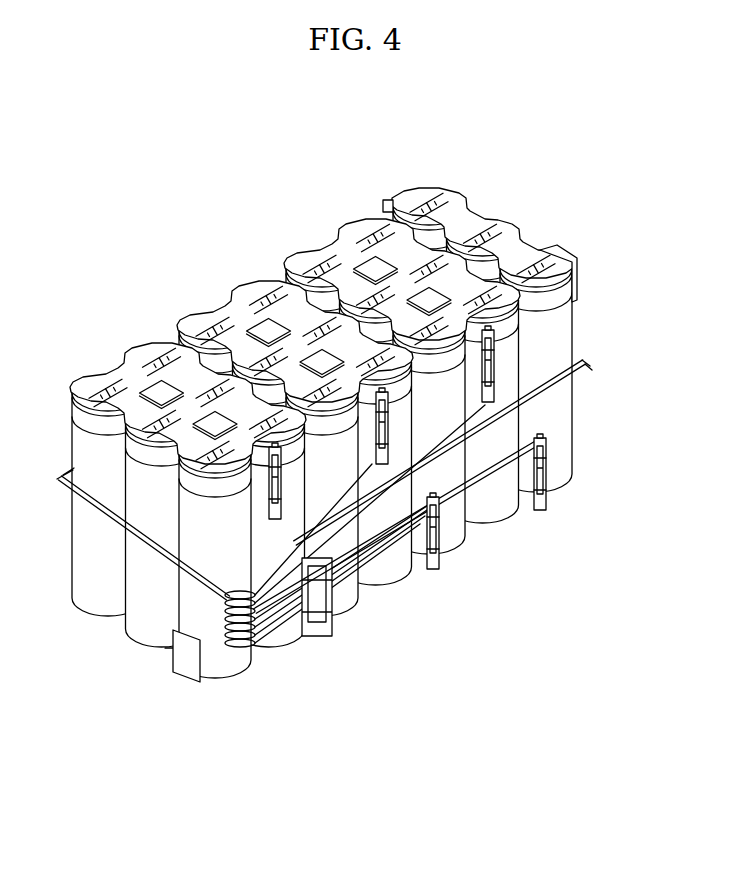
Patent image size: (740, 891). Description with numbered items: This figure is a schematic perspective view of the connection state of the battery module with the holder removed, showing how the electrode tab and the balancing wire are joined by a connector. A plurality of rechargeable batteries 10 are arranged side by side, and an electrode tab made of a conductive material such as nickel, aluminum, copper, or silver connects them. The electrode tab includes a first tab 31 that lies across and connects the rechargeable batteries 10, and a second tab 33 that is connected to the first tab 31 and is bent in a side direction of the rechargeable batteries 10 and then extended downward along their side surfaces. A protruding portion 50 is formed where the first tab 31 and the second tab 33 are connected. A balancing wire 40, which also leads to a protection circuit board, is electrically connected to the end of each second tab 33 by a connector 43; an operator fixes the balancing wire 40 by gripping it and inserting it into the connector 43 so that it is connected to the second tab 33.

The rechargeable battery 10 is at (95, 600).
The first tab 31 is at (468, 226).
The second tab 33 is at (382, 208).
The balancing wire 40 is at (448, 498).
The connector 43 is at (492, 400).
The protruding portion 50 is at (388, 200).